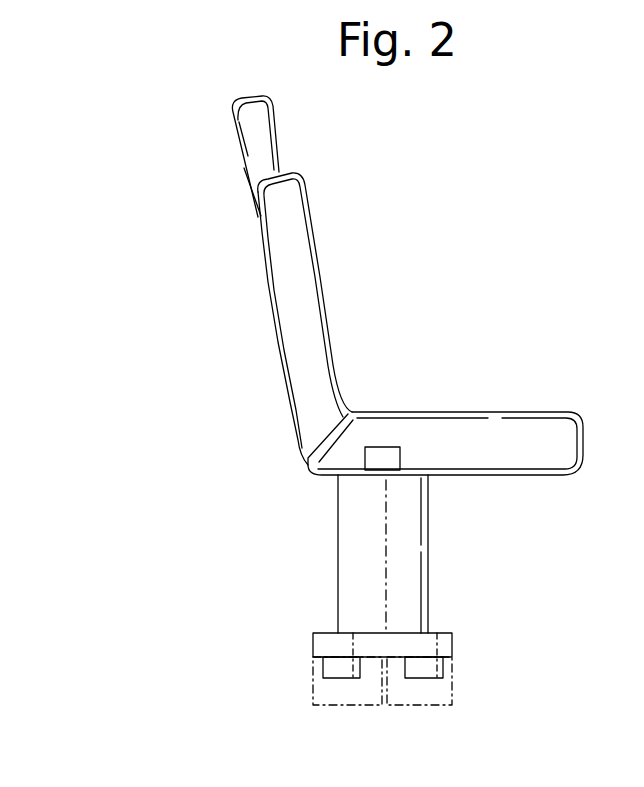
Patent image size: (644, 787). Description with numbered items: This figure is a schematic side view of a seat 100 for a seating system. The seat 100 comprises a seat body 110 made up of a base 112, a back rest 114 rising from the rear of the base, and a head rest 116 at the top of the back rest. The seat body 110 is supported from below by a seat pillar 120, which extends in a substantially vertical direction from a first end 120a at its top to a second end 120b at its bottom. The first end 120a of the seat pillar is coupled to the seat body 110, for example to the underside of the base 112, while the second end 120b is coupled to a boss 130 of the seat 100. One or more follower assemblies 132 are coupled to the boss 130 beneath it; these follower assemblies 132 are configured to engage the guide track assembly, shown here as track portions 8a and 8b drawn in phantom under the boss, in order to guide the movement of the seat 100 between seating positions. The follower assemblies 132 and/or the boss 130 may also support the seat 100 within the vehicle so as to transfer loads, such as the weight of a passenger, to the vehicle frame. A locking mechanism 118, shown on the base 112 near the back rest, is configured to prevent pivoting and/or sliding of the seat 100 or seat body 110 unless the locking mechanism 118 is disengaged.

The seat 100 is at (513, 240).
The seat body 110 is at (340, 319).
The base 112 is at (508, 412).
The back rest 114 is at (308, 233).
The head rest 116 is at (258, 130).
The locking mechanism 118 is at (380, 447).
The seat pillar 120 is at (392, 554).
The first end of the seat pillar 120a is at (430, 480).
The second end of the seat pillar 120b is at (338, 633).
The boss 130 is at (427, 642).
The follower assemblies 132 is at (337, 667).
The left rail 8a is at (306, 685).
The right rail 8b is at (455, 685).